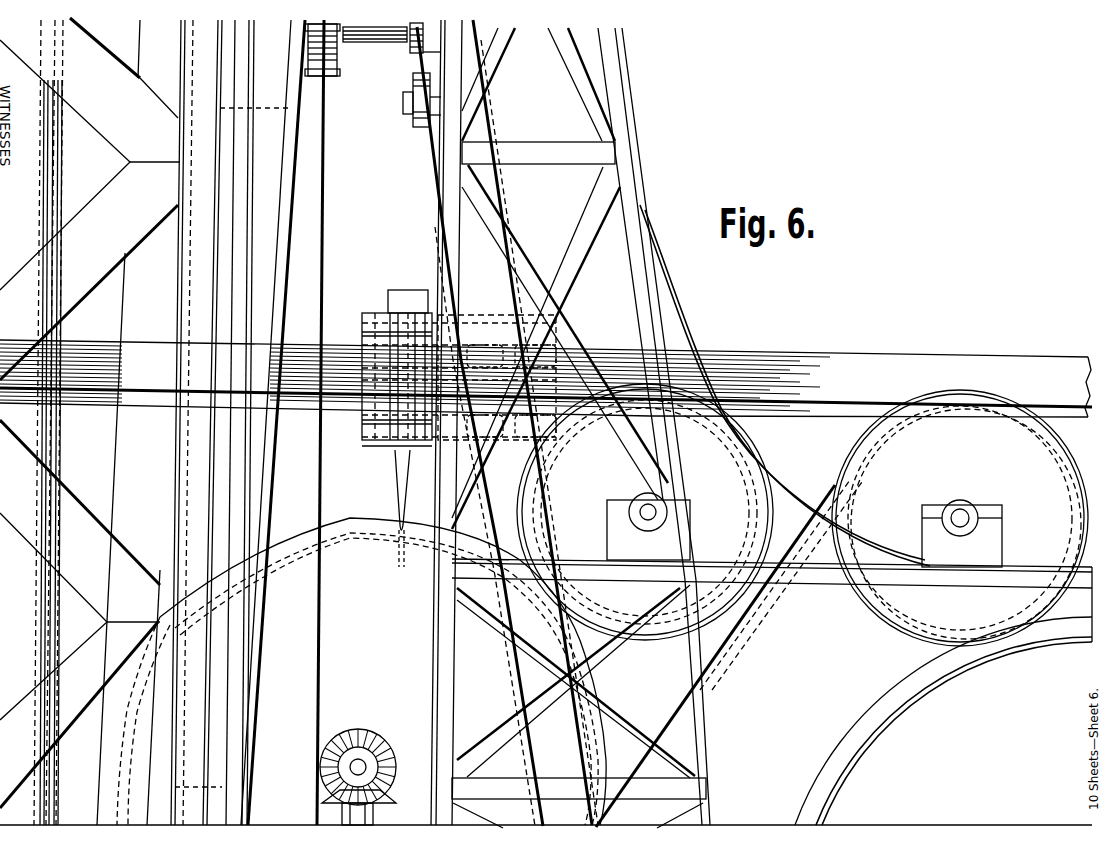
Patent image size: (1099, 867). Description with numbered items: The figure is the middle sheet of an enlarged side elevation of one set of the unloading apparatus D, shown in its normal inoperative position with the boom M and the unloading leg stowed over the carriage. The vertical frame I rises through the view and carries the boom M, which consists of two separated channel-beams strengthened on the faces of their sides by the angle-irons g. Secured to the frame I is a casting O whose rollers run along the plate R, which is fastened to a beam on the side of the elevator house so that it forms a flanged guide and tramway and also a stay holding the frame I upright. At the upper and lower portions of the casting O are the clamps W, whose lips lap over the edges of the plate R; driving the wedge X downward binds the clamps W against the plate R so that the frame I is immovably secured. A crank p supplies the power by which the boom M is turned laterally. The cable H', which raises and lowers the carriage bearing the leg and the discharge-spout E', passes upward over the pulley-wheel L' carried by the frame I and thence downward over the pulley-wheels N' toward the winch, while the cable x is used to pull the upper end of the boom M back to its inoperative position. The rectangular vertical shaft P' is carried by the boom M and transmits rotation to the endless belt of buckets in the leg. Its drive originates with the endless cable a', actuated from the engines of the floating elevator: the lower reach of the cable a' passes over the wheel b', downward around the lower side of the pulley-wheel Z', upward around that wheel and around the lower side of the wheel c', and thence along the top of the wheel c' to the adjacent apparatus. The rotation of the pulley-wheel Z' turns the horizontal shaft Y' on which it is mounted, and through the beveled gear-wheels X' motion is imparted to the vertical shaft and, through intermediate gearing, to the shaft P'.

The vertical shaft P' is at (144, 421).
The discharge-spout E' is at (266, 422).
The pulley-wheel L' is at (356, 50).
The pulley-wheels N' is at (409, 82).
The cable H' is at (395, 423).
The cable x is at (504, 190).
The unloading apparatus D is at (574, 304).
The wedge X is at (408, 292).
The casting O is at (478, 322).
The clamps W is at (362, 325).
The crank p is at (483, 418).
The plate R is at (545, 378).
The endless cable a' is at (546, 516).
The wheel c' is at (654, 512).
The wheel b' is at (960, 518).
The boom M is at (182, 445).
The pulley-wheel Z' is at (361, 671).
The angle-irons g is at (309, 586).
The horizontal shaft Y' is at (358, 747).
The beveled gear-wheels X' is at (368, 805).
The vertical frame I is at (706, 735).